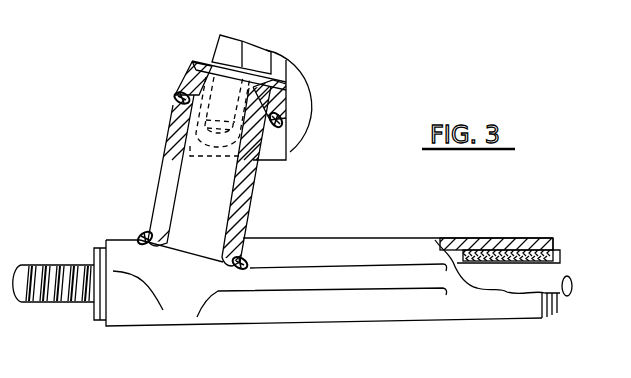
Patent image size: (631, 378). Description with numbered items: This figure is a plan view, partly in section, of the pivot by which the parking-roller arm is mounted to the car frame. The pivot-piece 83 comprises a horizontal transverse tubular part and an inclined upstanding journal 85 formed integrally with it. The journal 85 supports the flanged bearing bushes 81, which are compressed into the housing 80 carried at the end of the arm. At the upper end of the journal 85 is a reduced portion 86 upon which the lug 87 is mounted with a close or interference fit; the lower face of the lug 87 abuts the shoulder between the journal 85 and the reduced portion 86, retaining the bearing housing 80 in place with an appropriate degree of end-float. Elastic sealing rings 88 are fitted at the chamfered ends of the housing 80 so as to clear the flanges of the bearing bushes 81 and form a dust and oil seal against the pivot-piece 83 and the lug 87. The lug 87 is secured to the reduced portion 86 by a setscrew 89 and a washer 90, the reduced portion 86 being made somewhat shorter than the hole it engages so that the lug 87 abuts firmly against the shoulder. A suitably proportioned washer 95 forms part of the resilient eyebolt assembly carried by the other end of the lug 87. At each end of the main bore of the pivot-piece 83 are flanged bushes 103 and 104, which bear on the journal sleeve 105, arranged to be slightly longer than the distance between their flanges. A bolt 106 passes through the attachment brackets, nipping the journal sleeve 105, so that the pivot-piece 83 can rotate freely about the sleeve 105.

The housing 80 is at (245, 222).
The flanged bearing bushes 81 is at (180, 137).
The pivot-piece 83 is at (343, 282).
The inclined journal 85 is at (200, 174).
The reduced portion 86 is at (272, 117).
The lug 87 is at (178, 91).
The elastic sealing rings 88 is at (178, 93).
The setscrew 89 is at (254, 52).
The washer 90 is at (288, 70).
The washer 95 is at (301, 108).
The flanged bush 103 is at (555, 245).
The flanged bush 104 is at (96, 319).
The journal sleeve 105 is at (558, 259).
The bolt 106 is at (55, 255).